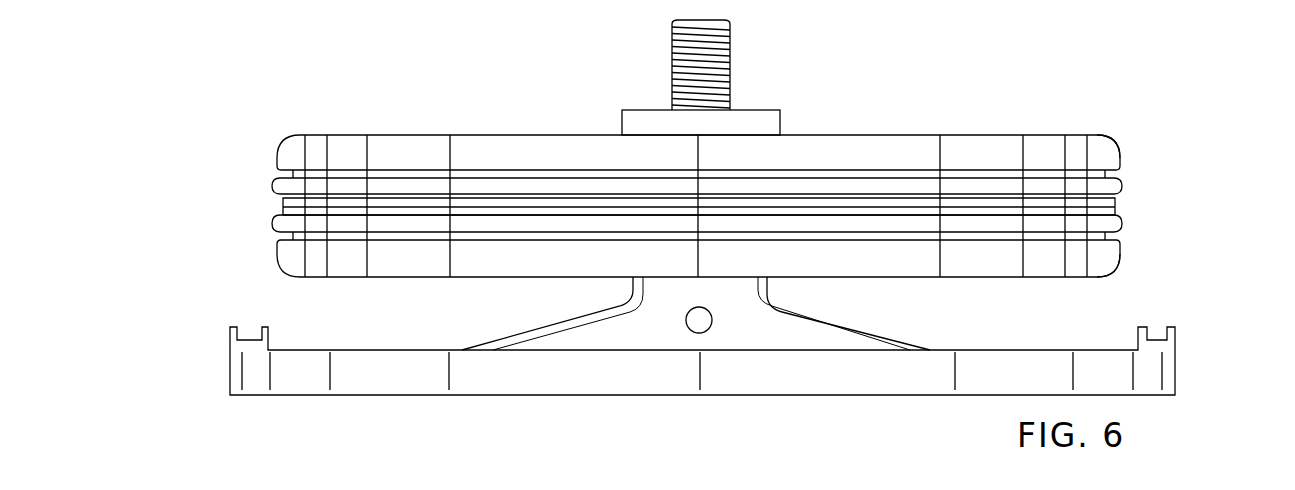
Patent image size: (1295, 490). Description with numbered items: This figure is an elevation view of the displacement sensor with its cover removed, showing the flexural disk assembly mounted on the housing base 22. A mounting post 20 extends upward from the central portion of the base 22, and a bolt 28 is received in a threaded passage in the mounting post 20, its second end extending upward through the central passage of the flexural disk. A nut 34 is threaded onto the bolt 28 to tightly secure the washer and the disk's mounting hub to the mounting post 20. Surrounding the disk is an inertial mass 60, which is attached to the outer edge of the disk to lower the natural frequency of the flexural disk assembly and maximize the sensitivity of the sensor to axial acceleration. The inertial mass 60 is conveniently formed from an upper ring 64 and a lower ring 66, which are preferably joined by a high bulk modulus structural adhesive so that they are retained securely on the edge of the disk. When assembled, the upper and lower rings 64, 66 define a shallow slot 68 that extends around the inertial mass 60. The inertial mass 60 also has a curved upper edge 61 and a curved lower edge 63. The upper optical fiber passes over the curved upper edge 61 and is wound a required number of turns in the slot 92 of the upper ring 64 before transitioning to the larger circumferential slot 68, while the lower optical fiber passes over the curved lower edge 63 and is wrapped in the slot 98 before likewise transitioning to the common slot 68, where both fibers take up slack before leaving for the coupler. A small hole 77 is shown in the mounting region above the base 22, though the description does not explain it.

The mounting post 20 is at (497, 337).
The base 22 is at (315, 396).
The bolt 28 is at (670, 43).
The nut 34 is at (748, 108).
The inertial mass 60 is at (867, 135).
The curved upper edge 61 is at (1110, 130).
The curved lower edge 63 is at (1119, 269).
The upper ring 64 is at (277, 160).
The lower ring 66 is at (277, 257).
The shallow slot 68 is at (1124, 206).
The hole 77 is at (699, 322).
The slot 92 is at (1127, 172).
The slot 98 is at (1128, 240).